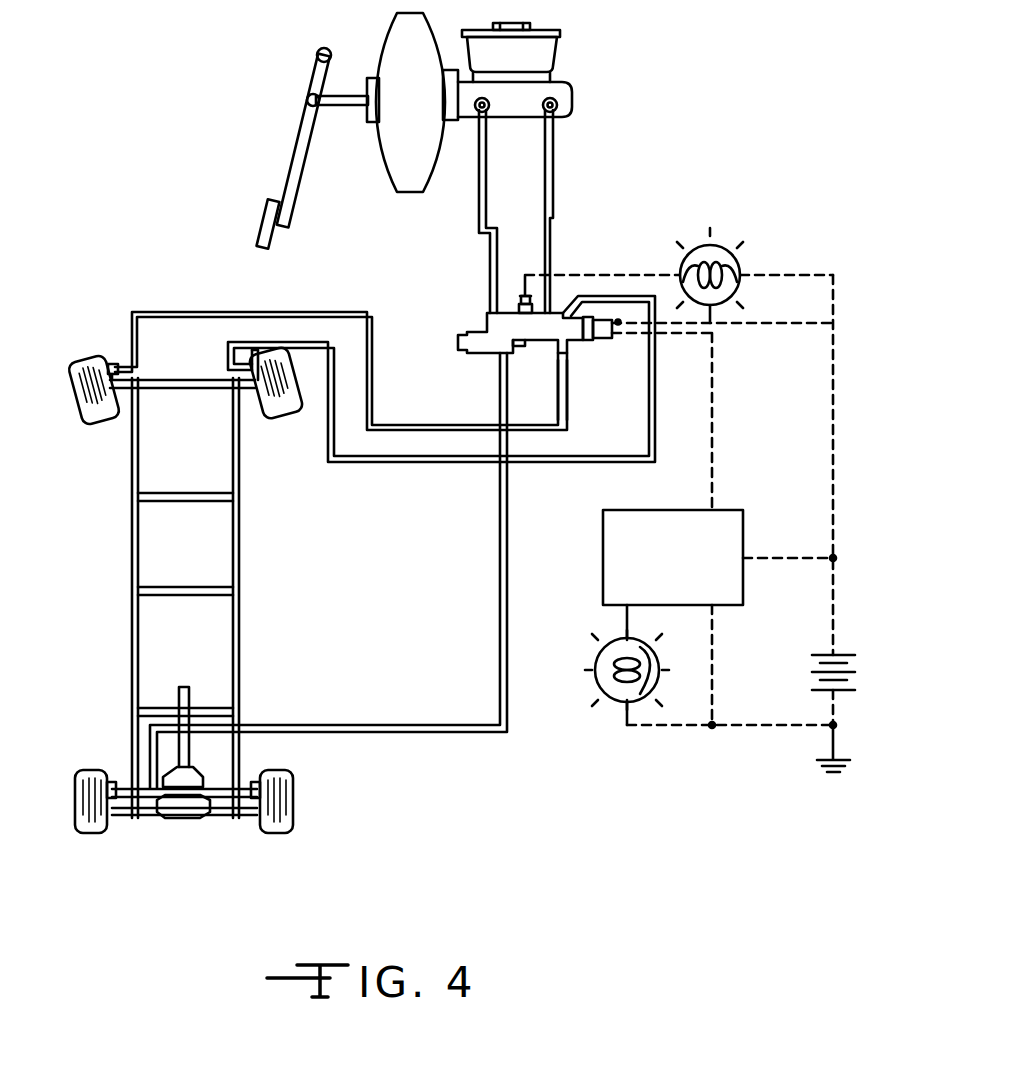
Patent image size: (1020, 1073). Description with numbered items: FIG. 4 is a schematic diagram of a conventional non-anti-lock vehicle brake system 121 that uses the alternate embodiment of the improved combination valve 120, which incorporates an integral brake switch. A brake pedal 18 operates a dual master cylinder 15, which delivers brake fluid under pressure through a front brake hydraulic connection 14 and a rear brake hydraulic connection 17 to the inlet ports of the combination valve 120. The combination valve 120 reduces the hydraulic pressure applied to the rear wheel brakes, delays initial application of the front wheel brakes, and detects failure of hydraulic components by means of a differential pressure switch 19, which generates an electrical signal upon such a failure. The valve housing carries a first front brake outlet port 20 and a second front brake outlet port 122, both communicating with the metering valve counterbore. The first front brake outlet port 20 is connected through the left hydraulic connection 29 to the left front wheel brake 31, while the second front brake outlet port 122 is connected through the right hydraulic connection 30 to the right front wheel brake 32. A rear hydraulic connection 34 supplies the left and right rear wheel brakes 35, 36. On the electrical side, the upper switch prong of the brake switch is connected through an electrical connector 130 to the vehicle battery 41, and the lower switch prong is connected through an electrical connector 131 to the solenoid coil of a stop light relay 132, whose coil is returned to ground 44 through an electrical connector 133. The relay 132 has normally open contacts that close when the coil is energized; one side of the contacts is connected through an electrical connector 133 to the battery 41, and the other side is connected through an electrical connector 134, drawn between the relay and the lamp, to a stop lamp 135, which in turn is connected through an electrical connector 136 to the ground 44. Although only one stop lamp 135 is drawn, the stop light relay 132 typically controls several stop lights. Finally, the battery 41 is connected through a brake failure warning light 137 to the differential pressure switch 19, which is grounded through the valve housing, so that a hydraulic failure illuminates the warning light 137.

The front brake hydraulic connection 14 is at (555, 201).
The dual master cylinder 15 is at (565, 92).
The rear brake hydraulic connection 17 is at (480, 213).
The brake pedal 18 is at (262, 214).
The differential pressure switch 19 is at (521, 290).
The front brake outlet port 20 is at (573, 358).
The left hydraulic connection 29 is at (376, 383).
The right hydraulic connection 30 is at (414, 464).
The left front wheel brake 31 is at (113, 364).
The right front wheel brake 32 is at (250, 366).
The rear hydraulic connection 34 is at (416, 736).
The left rear wheel brake 35 is at (108, 782).
The right rear wheel brake 36 is at (268, 775).
The vehicle battery 41 is at (826, 655).
The ground 44 is at (830, 762).
The combination valve 120 is at (482, 338).
The non-anti-lock brake system 121 is at (638, 162).
The second front brake outlet port 122 is at (563, 311).
The electrical connector 130 is at (750, 327).
The electrical connector 131 is at (714, 441).
The stop light relay 132 is at (603, 540).
The electrical connector 133 is at (776, 558).
The electrical conductor 134 is at (627, 618).
The stop lamp 135 is at (614, 702).
The electrical connector 136 is at (688, 727).
The brake failure warning light 137 is at (723, 243).